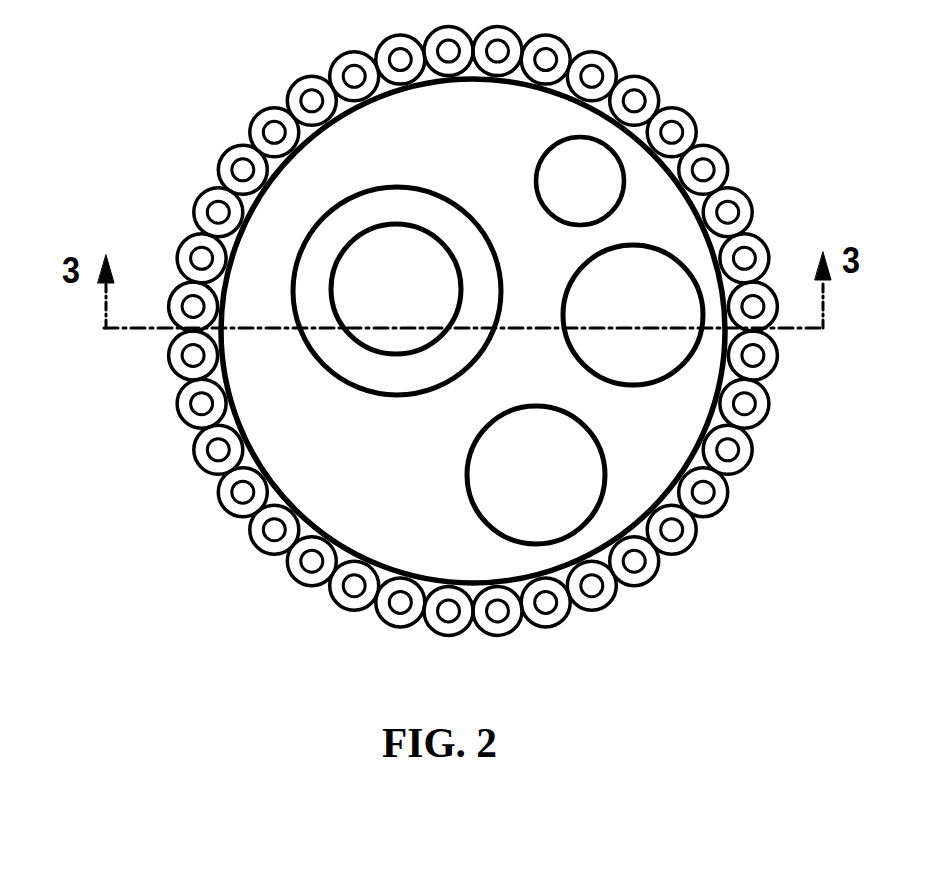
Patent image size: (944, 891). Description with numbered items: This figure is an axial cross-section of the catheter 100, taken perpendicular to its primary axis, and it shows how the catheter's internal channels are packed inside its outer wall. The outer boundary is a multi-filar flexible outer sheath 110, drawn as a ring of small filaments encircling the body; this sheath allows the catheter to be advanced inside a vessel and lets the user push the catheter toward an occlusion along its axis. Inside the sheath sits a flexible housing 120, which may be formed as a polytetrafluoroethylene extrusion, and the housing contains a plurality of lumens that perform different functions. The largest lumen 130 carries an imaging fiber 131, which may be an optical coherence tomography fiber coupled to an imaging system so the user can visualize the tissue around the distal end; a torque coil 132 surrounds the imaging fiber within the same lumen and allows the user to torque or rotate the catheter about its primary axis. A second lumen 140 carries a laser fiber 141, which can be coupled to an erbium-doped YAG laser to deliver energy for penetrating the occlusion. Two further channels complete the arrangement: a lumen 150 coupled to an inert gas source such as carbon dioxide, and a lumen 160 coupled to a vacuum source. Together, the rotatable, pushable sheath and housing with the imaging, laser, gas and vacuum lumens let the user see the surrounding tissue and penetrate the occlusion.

The catheter 100 is at (249, 73).
The multi-filar flexible outer sheath 110 is at (192, 212).
The flexible housing 120 is at (393, 428).
The lumen 130 is at (348, 192).
The imaging fiber 131 is at (412, 290).
The torque coil 132 is at (362, 360).
The lumen 140 is at (645, 385).
The laser fiber 141 is at (602, 318).
The lumen 150 is at (533, 182).
The lumen 160 is at (470, 452).